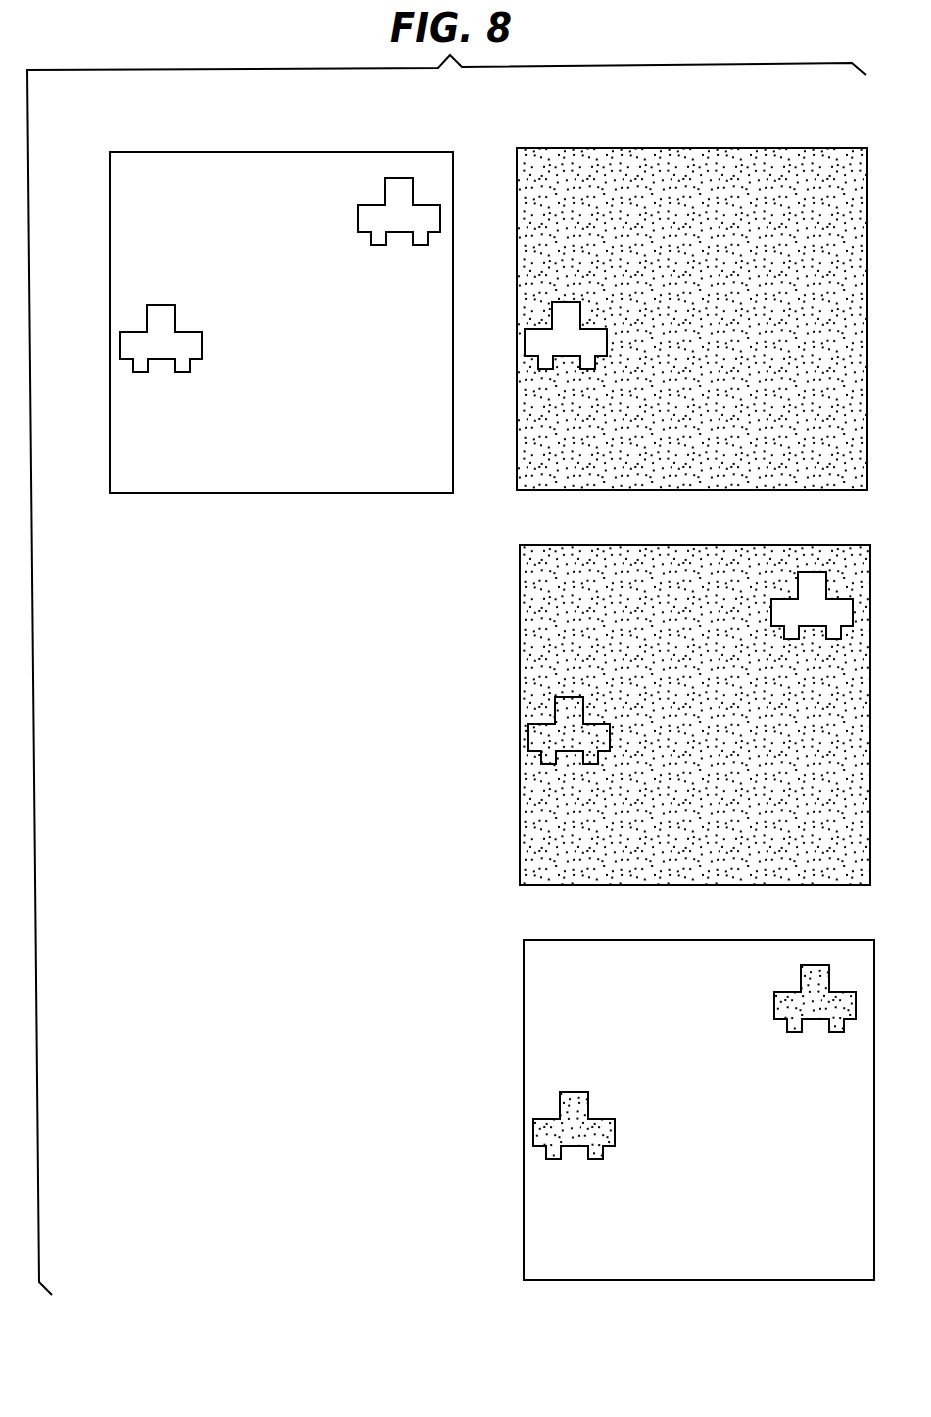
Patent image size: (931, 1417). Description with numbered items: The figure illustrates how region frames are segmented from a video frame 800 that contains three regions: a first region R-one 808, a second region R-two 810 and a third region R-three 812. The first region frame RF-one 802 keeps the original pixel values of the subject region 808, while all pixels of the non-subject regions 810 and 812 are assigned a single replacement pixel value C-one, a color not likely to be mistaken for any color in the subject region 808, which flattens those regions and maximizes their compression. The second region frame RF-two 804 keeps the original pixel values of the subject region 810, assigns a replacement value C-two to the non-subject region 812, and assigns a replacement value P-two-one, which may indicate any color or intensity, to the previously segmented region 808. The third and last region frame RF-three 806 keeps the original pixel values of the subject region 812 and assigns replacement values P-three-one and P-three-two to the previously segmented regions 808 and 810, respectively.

The video frame 800 is at (180, 152).
The region frame RF1 802 is at (590, 148).
The region frame RF2 804 is at (519, 607).
The region frame RF3 806 is at (524, 1000).
The region R1 808 is at (120, 346).
The region R2 810 is at (400, 178).
The region R3 812 is at (160, 451).